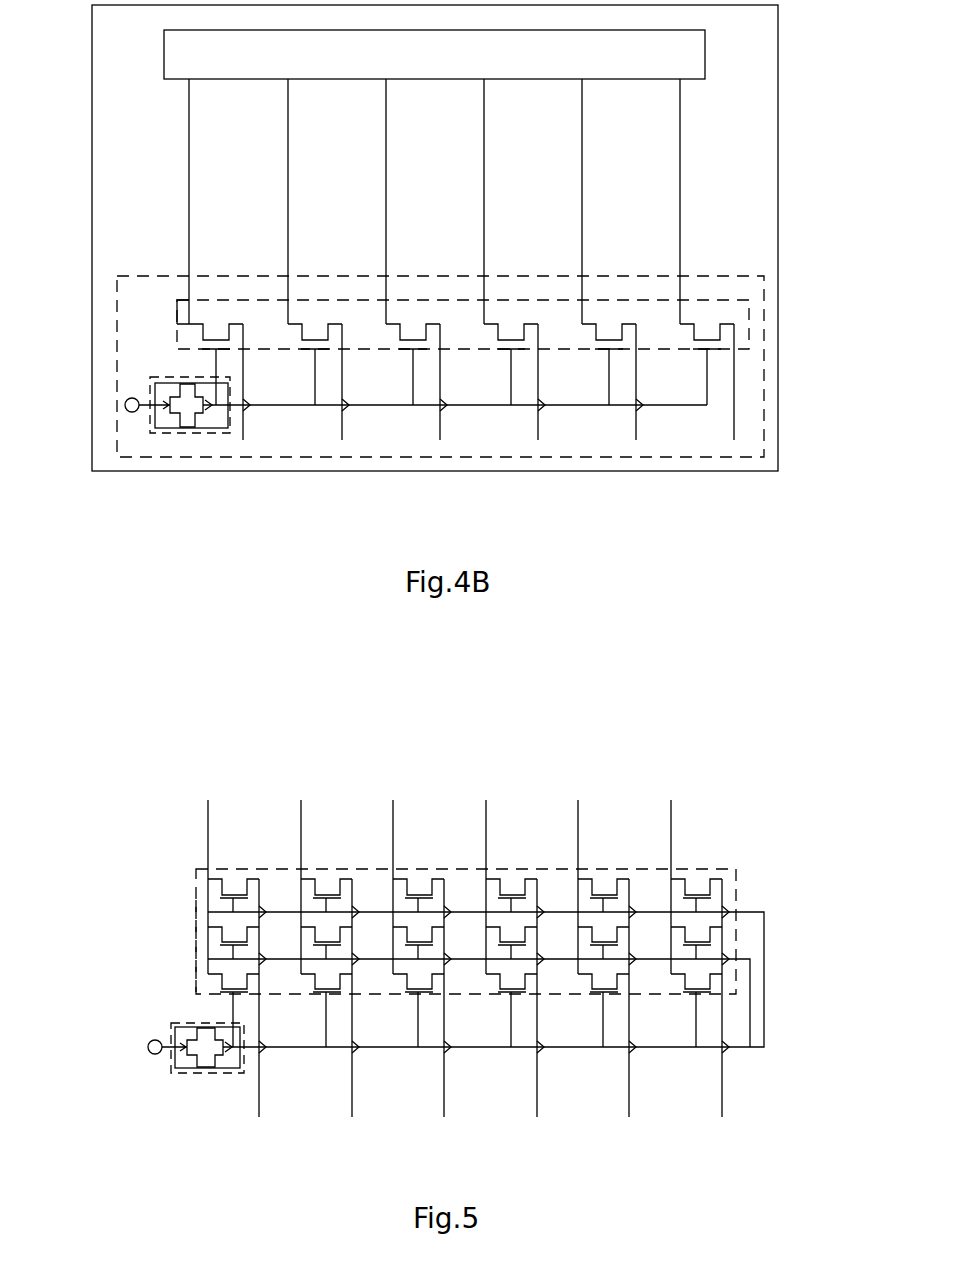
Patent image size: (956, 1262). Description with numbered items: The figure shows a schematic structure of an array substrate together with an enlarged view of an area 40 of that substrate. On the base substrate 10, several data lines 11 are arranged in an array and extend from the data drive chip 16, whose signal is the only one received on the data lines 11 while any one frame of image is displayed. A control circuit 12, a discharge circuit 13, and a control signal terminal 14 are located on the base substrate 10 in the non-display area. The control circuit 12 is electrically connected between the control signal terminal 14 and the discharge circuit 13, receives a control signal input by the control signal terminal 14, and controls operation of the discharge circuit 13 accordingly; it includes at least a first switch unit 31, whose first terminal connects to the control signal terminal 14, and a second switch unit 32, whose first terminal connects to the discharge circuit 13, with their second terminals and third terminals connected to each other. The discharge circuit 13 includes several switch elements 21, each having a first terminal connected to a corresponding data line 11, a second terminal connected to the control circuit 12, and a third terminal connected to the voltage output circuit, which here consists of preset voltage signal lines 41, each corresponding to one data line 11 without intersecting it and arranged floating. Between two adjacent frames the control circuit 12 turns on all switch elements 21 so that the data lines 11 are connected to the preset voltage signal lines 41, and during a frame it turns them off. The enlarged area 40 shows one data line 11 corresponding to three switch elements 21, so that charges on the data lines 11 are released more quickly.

In FIG. 4B, the base substrate 10 is at (91, 153).
In FIG. 4B, the data line 11 is at (680, 128).
In FIG. 5, the data line 11 is at (671, 843).
In FIG. 4B, the control circuit 12 is at (247, 412).
In FIG. 5, the control circuit 12 is at (245, 1053).
In FIG. 4B, the discharge circuit 13 is at (177, 319).
In FIG. 5, the discharge circuit 13 is at (196, 968).
In FIG. 4B, the control signal terminal 14 is at (125, 406).
In FIG. 5, the control signal terminal 14 is at (148, 1047).
In FIG. 4B, the data drive chip 16 is at (705, 55).
In FIG. 4B, the switch element 21 is at (728, 324).
In FIG. 5, the switch element 21 is at (719, 963).
In FIG. 4B, the first switch unit 31 is at (167, 407).
In FIG. 5, the first switch unit 31 is at (185, 1050).
In FIG. 4B, the second switch unit 32 is at (209, 408).
In FIG. 5, the second switch unit 32 is at (227, 1047).
In FIG. 4B, the area 40 is at (764, 383).
In FIG. 4B, the preset voltage signal line 41 is at (540, 372).
In FIG. 5, the preset voltage signal line 41 is at (538, 1017).